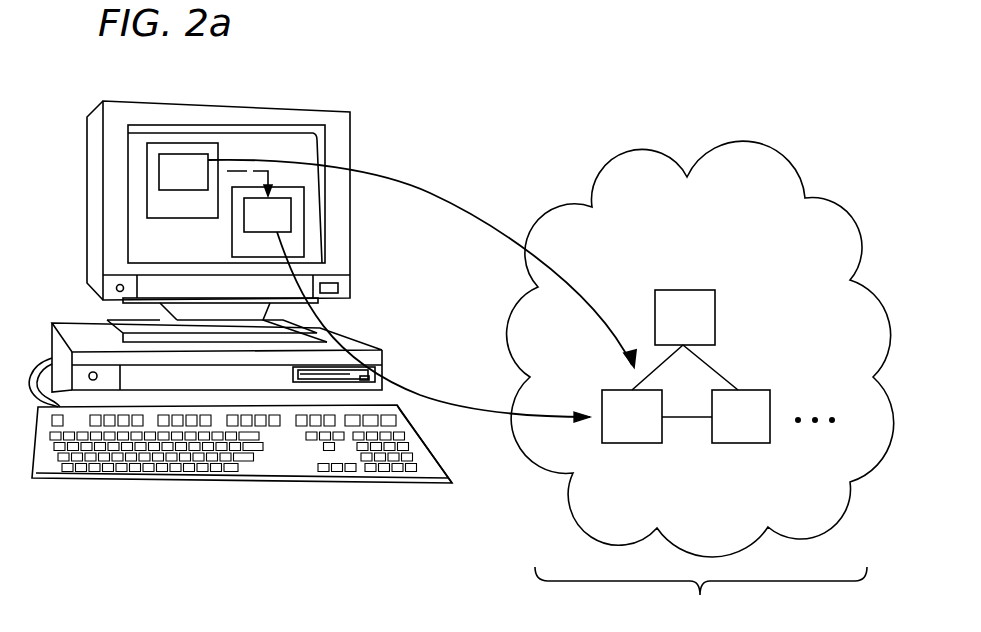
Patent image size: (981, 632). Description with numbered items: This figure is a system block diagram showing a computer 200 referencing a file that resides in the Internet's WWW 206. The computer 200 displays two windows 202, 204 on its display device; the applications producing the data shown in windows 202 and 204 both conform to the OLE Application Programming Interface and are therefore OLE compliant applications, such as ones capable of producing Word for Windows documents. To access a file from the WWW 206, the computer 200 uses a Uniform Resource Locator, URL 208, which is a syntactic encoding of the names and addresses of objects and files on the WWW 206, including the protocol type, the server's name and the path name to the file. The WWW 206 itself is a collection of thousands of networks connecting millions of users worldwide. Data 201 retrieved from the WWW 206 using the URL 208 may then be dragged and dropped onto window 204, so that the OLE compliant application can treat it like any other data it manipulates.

The computer 200 is at (233, 108).
The data 201 is at (158, 167).
The window 202 is at (147, 197).
The window 204 is at (304, 233).
The Internet's WWW 206 is at (728, 142).
The Uniform Resource Locator (URL) 208 is at (388, 177).